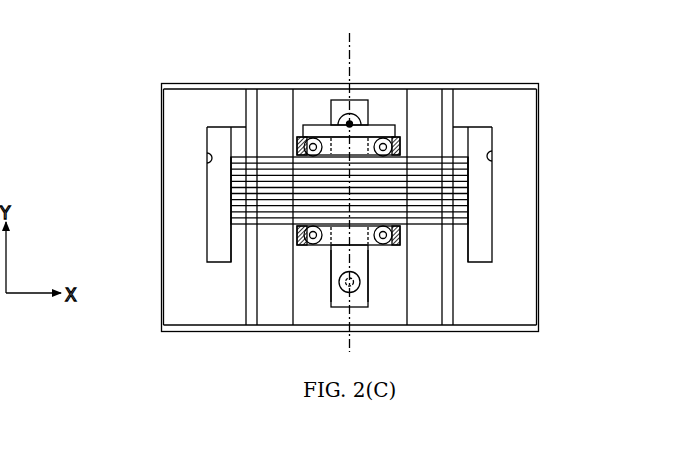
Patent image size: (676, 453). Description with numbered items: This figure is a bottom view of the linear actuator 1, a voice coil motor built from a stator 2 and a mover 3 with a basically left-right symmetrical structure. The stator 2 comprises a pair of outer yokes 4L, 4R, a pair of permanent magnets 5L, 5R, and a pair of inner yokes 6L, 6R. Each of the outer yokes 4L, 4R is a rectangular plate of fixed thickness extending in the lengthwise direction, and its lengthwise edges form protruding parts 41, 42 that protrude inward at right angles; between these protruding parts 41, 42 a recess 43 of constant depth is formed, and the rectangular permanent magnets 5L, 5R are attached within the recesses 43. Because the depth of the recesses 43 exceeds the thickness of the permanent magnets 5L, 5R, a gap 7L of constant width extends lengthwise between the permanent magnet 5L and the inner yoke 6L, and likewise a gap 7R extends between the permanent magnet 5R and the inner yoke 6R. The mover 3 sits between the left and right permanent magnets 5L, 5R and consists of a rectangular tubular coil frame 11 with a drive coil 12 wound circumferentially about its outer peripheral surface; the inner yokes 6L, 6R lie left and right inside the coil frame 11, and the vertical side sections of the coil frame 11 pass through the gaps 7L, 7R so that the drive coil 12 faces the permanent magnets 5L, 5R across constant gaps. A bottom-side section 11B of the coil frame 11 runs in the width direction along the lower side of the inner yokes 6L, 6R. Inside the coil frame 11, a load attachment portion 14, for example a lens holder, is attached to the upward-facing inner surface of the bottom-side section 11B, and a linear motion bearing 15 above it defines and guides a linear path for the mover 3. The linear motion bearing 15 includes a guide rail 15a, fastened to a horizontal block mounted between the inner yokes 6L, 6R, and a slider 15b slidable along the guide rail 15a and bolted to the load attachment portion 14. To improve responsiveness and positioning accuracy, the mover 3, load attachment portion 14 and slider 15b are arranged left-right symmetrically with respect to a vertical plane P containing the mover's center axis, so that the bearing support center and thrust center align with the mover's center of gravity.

The linear actuator 1 is at (130, 67).
The stator 2 is at (148, 180).
The mover 3 is at (266, 146).
The outer yoke 4R is at (178, 130).
The outer yoke 4L is at (520, 130).
The permanent magnet 5R is at (217, 212).
The permanent magnet 5L is at (485, 213).
The inner yoke 6R is at (268, 244).
The inner yoke 6L is at (432, 247).
The gap 7R is at (237, 238).
The gap 7L is at (462, 238).
The coil frame 11 is at (284, 150).
The bottom-side section 11B is at (415, 157).
The drive coil 12 is at (276, 175).
The load attachment portion 14 is at (337, 247).
The linear motion bearing 15 is at (603, 271).
The guide rail 15a is at (362, 268).
The slider 15b is at (360, 245).
The protruding part 41 is at (233, 298).
The protruding part 42 is at (237, 100).
The recess 43 is at (207, 158).
The plane P is at (353, 47).